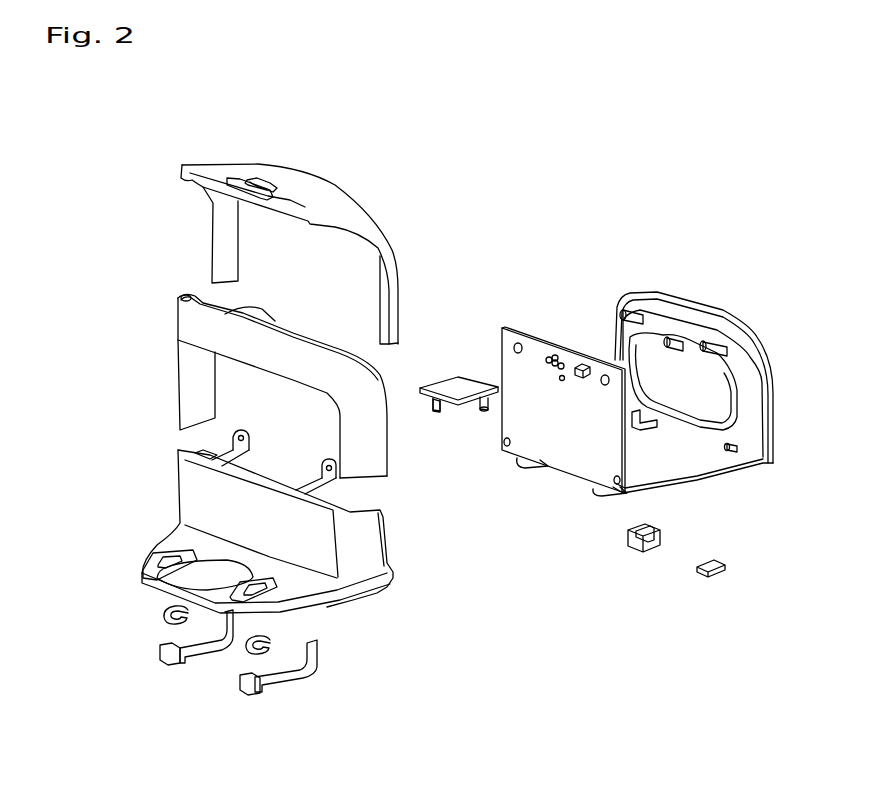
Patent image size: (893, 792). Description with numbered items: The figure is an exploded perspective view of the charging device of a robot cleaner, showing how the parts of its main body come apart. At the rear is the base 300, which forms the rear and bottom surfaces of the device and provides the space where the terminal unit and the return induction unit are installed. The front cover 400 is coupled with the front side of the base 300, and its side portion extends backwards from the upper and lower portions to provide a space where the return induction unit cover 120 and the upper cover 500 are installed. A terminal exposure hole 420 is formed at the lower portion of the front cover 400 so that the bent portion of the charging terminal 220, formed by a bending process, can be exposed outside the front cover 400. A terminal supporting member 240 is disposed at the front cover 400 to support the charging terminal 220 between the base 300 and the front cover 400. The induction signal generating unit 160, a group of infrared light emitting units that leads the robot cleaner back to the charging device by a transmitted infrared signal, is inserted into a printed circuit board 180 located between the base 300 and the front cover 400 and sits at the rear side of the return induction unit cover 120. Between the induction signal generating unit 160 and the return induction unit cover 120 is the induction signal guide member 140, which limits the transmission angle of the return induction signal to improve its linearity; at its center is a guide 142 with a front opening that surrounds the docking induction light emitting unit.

The upper cover 500 is at (315, 186).
The return induction unit cover 120 is at (205, 330).
The front cover 400 is at (195, 493).
The terminal exposure hole 420 is at (240, 597).
The charging terminal 220 is at (253, 646).
The terminal supporting member 240 is at (233, 613).
The induction signal guide member 140 is at (458, 374).
The guide 142 is at (443, 410).
The induction signal generating unit 160 is at (560, 355).
The printed circuit board 180 is at (568, 460).
The base 300 is at (707, 317).